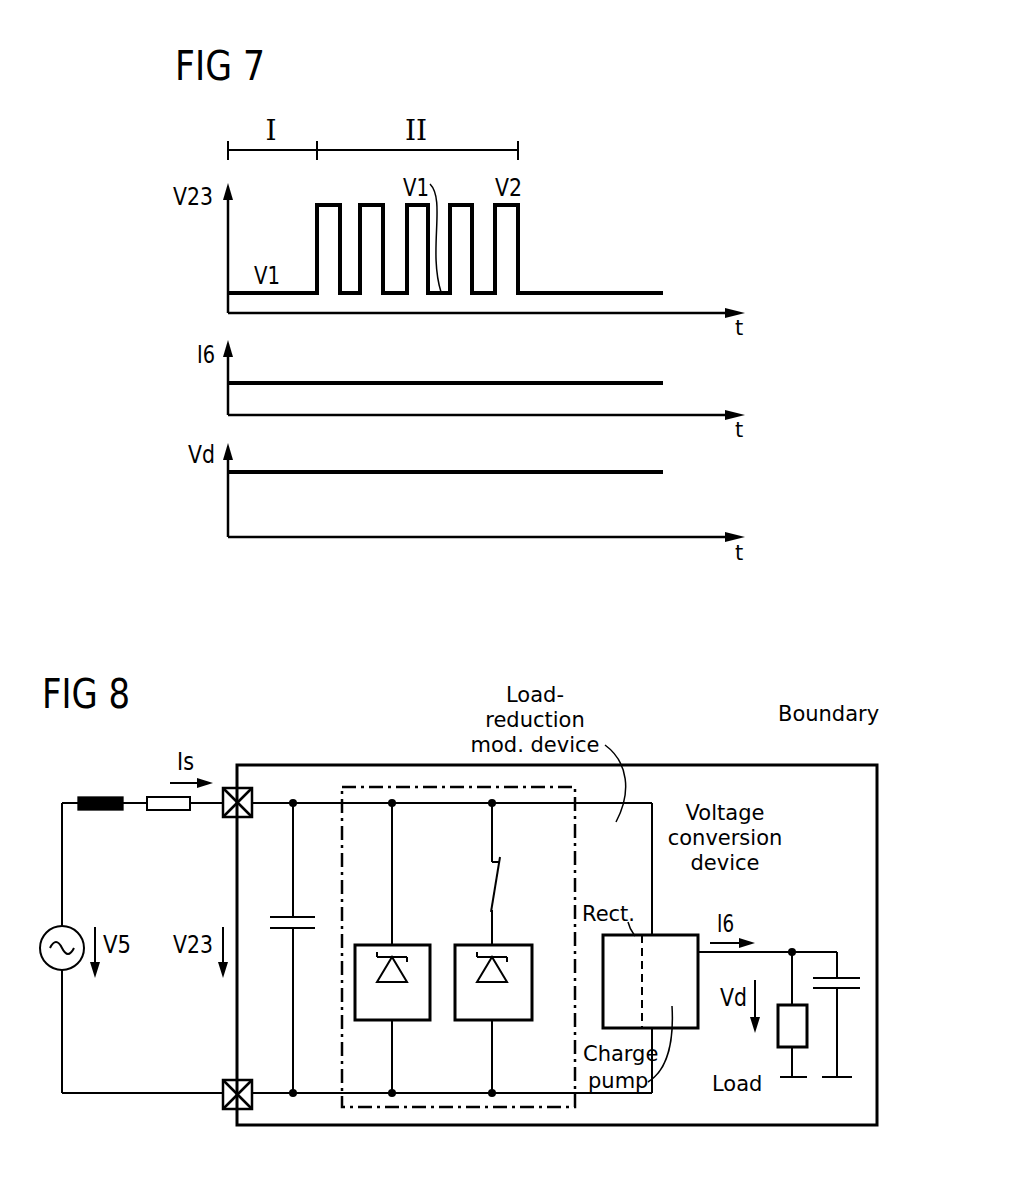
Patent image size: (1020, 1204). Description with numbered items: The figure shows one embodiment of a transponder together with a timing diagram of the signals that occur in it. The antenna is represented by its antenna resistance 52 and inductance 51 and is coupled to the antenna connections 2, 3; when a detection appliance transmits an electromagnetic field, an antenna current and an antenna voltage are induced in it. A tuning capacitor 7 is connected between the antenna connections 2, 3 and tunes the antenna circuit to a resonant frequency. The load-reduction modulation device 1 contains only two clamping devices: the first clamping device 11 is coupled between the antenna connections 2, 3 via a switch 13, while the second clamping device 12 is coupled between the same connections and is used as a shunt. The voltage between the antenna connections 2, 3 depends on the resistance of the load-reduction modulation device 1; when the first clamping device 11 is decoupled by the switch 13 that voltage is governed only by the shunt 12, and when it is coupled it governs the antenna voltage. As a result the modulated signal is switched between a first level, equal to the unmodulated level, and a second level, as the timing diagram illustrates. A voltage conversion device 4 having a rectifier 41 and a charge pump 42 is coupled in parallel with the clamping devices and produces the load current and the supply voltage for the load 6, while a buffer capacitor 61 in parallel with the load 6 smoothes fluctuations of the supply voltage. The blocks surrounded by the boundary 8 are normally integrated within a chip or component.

The load-reduction modulation device 1 is at (577, 824).
The antenna connection 2 is at (234, 788).
The antenna connection 3 is at (234, 1109).
The voltage conversion device 4 is at (654, 949).
The load 6 is at (778, 1041).
The tuning capacitor 7 is at (300, 916).
The boundary 8 is at (745, 765).
The first clamping device 11 is at (504, 1021).
The second clamping device 12 is at (404, 1021).
The switch 13 is at (500, 880).
The rectifier 41 is at (637, 1000).
The charge pump 42 is at (684, 1000).
The inductance 51 is at (104, 812).
The antenna resistance 52 is at (171, 812).
The buffer capacitor 61 is at (843, 976).